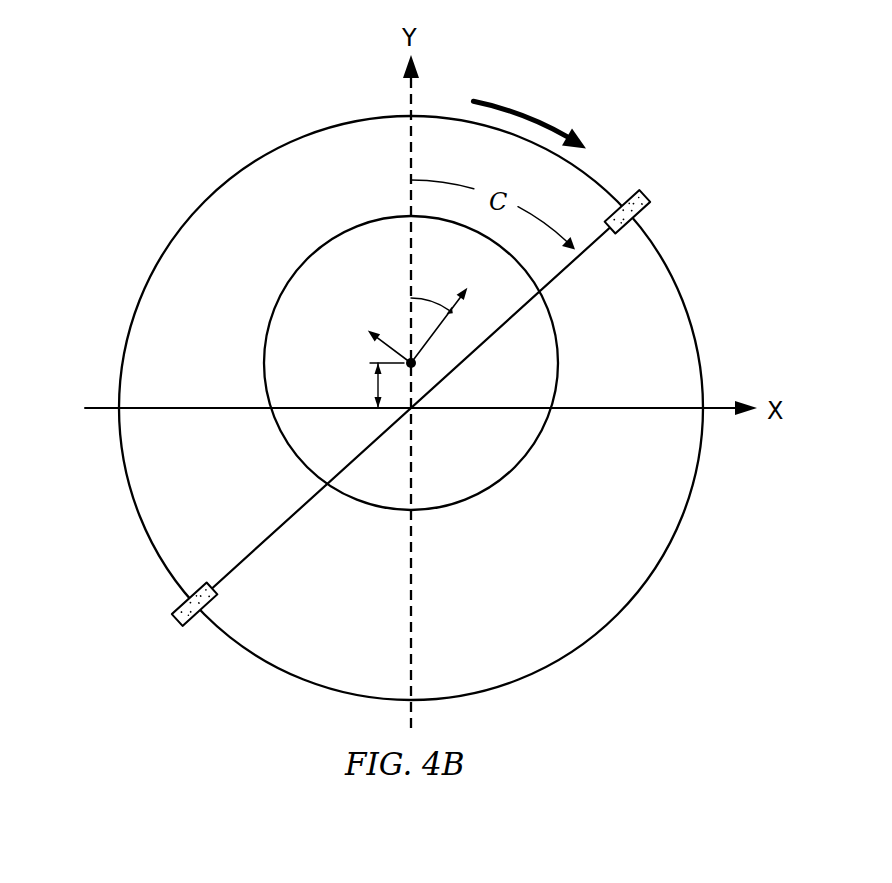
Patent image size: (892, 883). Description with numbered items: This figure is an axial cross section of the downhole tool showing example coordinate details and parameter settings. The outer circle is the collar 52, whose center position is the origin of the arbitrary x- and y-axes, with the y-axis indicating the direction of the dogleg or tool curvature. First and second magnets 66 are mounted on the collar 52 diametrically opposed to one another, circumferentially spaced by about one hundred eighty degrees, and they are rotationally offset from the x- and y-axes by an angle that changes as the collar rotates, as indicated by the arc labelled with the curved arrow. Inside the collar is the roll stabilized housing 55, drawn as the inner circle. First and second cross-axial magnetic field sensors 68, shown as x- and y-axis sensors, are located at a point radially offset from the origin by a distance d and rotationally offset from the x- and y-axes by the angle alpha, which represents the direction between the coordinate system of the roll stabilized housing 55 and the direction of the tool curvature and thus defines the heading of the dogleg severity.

The collar 52 is at (176, 234).
The roll stabilized housing 55 is at (272, 314).
The first and second magnets 66 is at (638, 209).
The first and second cross-axial magnetic field sensors 68 is at (416, 367).